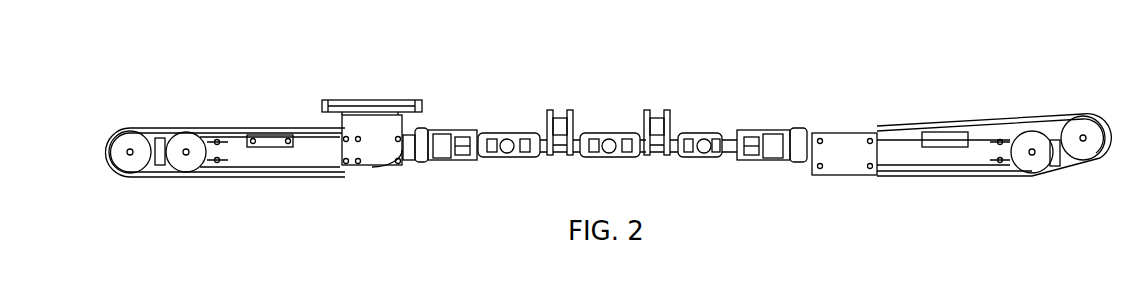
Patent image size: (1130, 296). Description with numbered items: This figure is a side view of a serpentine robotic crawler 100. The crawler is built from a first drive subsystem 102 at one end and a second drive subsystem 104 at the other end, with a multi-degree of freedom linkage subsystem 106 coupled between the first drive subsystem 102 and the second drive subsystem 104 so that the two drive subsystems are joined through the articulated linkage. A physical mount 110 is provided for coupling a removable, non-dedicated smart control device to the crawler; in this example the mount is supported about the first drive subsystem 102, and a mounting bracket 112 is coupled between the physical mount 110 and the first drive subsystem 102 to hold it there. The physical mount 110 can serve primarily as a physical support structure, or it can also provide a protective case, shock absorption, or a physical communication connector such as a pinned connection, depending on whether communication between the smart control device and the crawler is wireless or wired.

The serpentine robotic crawler 100 is at (875, 50).
The first drive subsystem 102 is at (240, 127).
The second drive subsystem 104 is at (983, 122).
The multi-degree of freedom linkage subsystem 106 is at (798, 87).
The physical mount 110 is at (367, 100).
The mounting bracket 112 is at (367, 148).